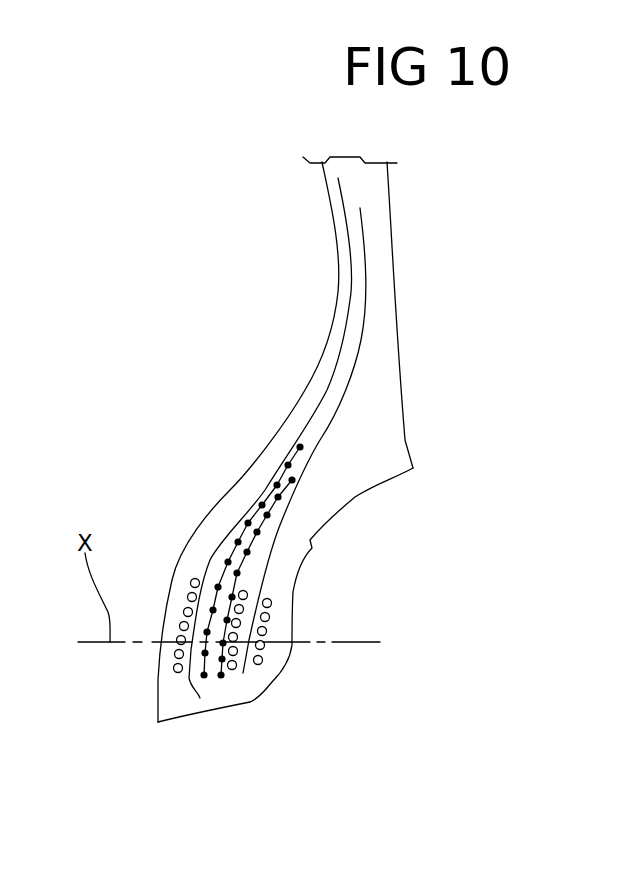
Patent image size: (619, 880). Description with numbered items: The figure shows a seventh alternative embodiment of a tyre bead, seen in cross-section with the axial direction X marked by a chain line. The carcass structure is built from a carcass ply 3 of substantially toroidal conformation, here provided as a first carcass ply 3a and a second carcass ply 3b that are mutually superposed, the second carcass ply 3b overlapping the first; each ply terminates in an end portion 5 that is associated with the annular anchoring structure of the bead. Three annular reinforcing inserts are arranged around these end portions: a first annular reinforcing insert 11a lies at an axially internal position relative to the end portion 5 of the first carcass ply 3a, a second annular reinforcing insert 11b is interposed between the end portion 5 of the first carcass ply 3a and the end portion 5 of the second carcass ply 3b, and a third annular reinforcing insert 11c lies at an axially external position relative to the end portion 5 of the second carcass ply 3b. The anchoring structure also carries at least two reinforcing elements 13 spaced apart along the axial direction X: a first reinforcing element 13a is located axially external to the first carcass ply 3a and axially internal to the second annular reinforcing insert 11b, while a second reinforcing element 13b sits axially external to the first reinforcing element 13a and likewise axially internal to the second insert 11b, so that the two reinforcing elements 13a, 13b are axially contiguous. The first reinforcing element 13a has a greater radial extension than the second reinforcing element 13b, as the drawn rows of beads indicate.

The carcass ply 3 is at (343, 187).
The first carcass ply 3a is at (352, 282).
The second carcass ply 3b is at (365, 300).
The reinforcing element 13 is at (274, 528).
The first reinforcing element 13a is at (258, 517).
The second reinforcing element 13b is at (256, 530).
The end portion 5 is at (200, 698).
The first annular reinforcing insert 11a is at (178, 673).
The second annular reinforcing insert 11b is at (233, 670).
The third annular reinforcing insert 11c is at (260, 664).